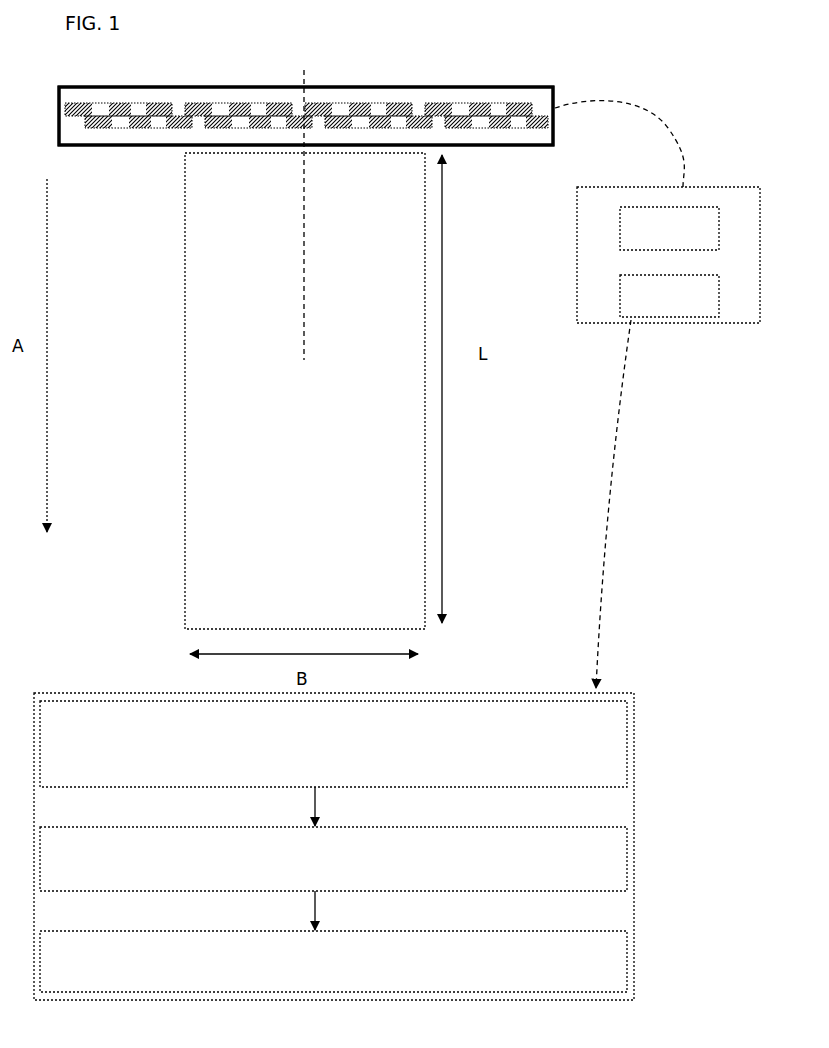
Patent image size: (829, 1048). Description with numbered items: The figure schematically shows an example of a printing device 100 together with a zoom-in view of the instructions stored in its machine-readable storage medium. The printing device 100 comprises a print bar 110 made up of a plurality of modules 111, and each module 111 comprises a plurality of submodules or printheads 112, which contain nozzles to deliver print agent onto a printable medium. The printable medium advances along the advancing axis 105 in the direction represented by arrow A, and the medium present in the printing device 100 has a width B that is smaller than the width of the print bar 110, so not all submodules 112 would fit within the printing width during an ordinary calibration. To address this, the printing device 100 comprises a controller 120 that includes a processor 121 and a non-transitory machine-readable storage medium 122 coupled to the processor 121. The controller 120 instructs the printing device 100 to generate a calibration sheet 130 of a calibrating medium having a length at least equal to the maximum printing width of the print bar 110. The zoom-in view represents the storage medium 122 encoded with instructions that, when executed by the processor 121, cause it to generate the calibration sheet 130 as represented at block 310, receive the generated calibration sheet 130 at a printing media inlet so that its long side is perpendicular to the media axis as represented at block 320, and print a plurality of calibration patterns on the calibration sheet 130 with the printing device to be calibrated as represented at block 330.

The printing device 100 is at (323, 58).
The advancing axis 105 is at (306, 73).
The print bar 110 is at (156, 146).
The module 111 is at (506, 106).
The submodule or printhead 112 is at (556, 95).
The controller 120 is at (670, 323).
The processor 121 is at (669, 228).
The non-transitory machine-readable storage medium 122 is at (636, 703).
The calibration sheet 130 is at (326, 404).
The block 310 is at (628, 753).
The block 320 is at (628, 857).
The block 330 is at (628, 950).